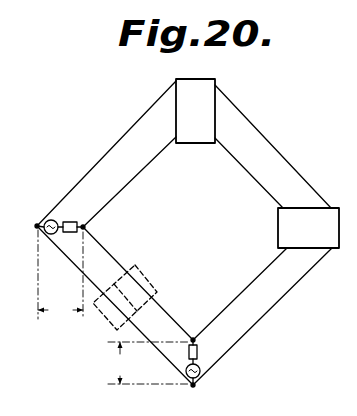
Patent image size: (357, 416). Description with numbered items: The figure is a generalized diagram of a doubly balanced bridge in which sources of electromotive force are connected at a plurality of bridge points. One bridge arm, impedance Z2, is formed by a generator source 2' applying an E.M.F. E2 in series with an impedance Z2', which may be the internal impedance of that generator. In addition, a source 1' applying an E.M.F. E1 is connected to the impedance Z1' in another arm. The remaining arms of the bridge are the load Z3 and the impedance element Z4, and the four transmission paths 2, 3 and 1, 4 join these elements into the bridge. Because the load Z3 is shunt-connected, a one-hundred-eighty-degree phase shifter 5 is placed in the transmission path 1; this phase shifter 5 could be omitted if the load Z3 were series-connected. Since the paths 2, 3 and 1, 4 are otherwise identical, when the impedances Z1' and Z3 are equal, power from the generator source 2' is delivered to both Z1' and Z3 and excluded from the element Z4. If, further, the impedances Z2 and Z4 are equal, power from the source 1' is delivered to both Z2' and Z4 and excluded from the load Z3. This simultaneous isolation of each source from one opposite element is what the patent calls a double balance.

The transmission path 1 is at (115, 305).
The transmission path 2 is at (106, 154).
The transmission path 3 is at (273, 146).
The transmission path 4 is at (262, 316).
The 180° phase shifter 5 is at (157, 292).
The source 1' is at (209, 380).
The generator source 2' is at (42, 205).
The impedance Z1' is at (226, 357).
The impedance Z2' is at (97, 215).
The load Z3 is at (195, 111).
The impedance element Z4 is at (308, 228).
The E.M.F. E1 is at (149, 363).
The E.M.F. E2 is at (60, 279).